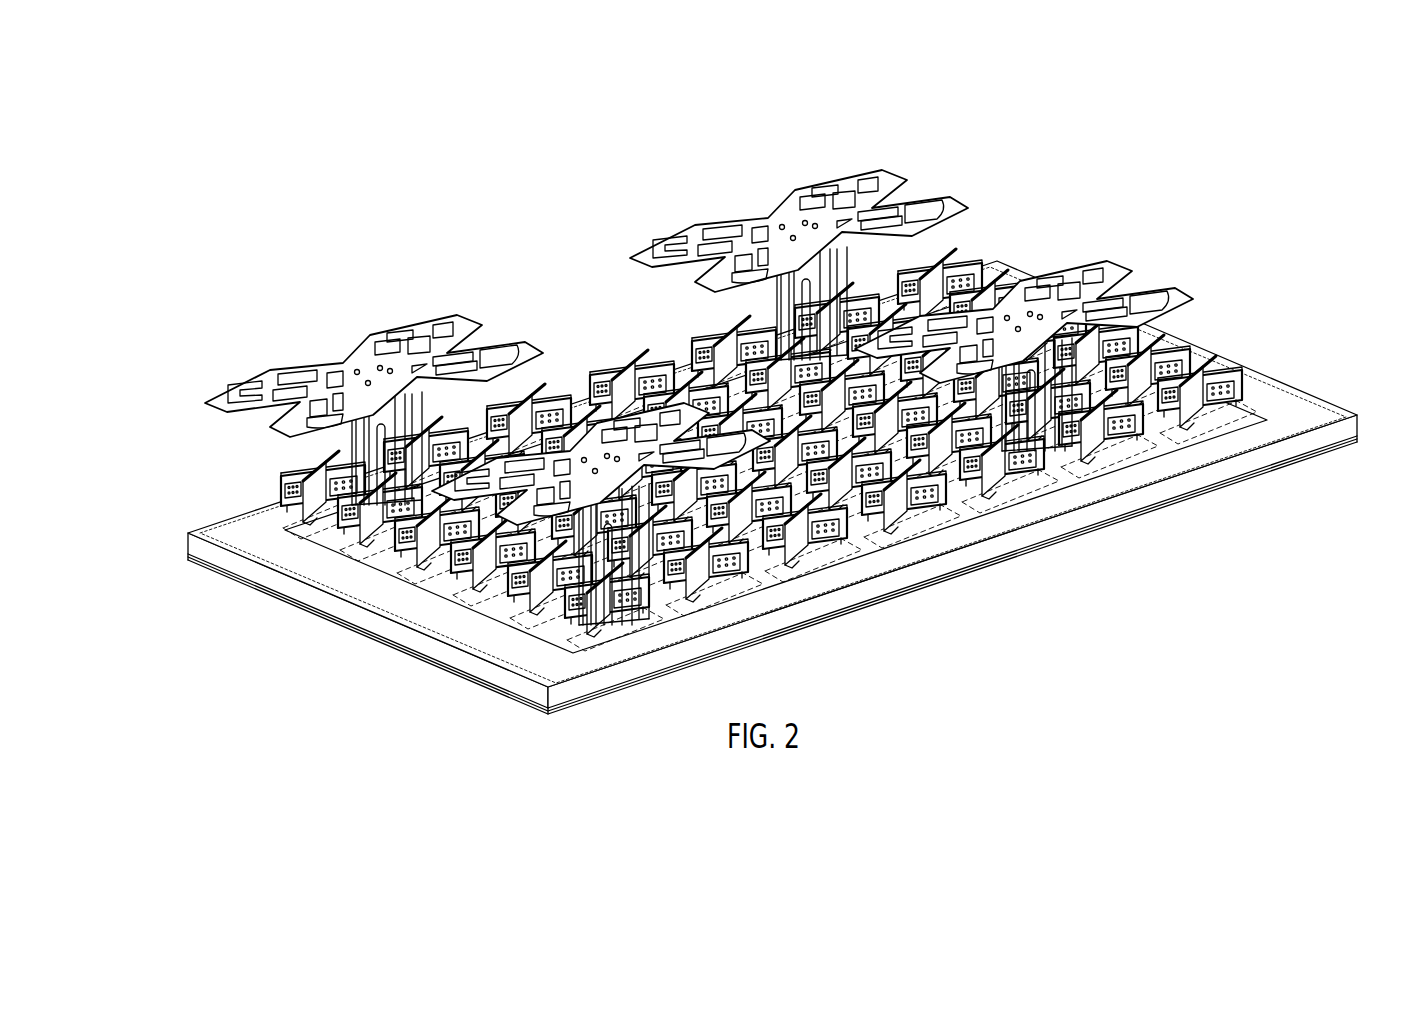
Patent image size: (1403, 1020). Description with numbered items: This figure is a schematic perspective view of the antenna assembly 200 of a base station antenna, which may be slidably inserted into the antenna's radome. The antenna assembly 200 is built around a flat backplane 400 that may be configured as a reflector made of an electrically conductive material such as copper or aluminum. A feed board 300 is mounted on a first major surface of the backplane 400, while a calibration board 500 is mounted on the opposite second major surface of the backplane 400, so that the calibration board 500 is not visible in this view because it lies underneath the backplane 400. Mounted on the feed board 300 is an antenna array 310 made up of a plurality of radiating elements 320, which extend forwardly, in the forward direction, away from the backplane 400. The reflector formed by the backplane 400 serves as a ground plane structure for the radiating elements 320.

The antenna assembly 200 is at (750, 420).
The feed board 300 is at (365, 545).
The antenna array 310 is at (1068, 205).
The radiating elements 320 is at (1165, 296).
The backplane 400 is at (485, 633).
The calibration board 500 is at (1018, 572).